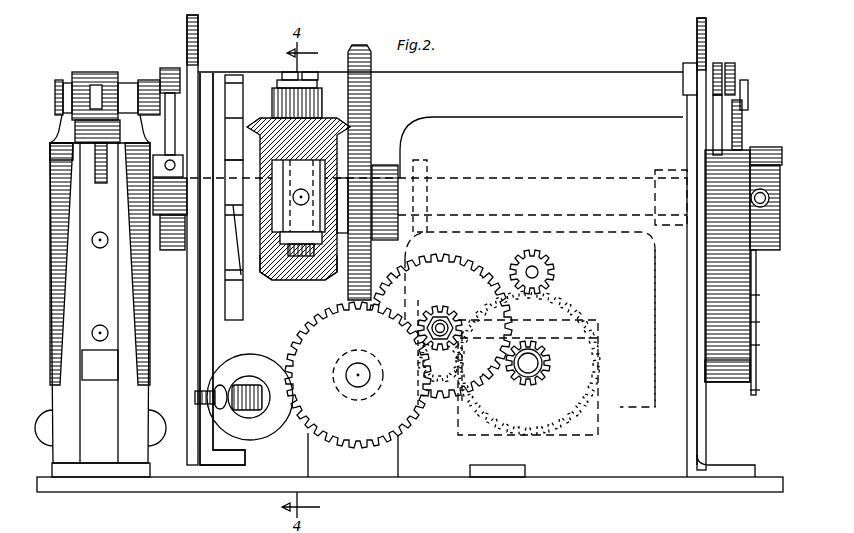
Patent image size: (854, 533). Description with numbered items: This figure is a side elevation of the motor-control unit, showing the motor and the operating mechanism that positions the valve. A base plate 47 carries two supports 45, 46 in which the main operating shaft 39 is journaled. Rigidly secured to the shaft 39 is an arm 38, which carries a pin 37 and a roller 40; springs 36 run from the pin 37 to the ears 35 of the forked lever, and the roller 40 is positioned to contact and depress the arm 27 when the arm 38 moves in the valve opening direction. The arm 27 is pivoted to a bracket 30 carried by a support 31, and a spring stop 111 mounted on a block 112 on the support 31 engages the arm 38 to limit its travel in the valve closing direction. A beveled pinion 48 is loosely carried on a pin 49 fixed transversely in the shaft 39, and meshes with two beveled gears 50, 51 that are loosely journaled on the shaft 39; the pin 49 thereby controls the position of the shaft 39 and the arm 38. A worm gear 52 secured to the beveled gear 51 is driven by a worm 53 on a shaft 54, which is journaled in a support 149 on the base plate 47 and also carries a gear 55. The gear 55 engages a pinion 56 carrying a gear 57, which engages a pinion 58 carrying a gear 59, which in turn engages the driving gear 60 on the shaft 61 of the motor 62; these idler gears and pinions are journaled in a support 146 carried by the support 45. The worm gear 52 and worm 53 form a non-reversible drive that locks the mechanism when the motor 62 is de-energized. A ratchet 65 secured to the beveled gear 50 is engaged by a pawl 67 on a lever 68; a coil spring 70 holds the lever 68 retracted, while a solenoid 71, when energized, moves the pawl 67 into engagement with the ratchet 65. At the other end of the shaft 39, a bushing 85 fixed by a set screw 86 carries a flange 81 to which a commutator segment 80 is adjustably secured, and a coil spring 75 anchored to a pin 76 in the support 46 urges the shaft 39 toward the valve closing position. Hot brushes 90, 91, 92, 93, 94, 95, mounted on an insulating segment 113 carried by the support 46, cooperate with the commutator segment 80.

The arm 27 is at (50, 151).
The bracket 30 is at (95, 219).
The support 31 is at (70, 400).
The ears 35 is at (38, 428).
The springs 36 is at (58, 259).
The pin 37 is at (55, 97).
The arm 38 is at (160, 72).
The main operating shaft 39 is at (468, 184).
The roller 40 is at (97, 78).
The support 45 is at (198, 38).
The support 46 is at (706, 33).
The base plate 47 is at (564, 484).
The beveled pinion 48 is at (308, 145).
The pin 49 is at (308, 153).
The beveled gear 50 is at (264, 256).
The beveled gear 51 is at (338, 262).
The worm gear 52 is at (372, 98).
The worm 53 is at (352, 393).
The shaft 54 is at (362, 384).
The gear 55 is at (405, 425).
The pinion 56 is at (444, 312).
The gear 57 is at (444, 396).
The pinion 58 is at (538, 373).
The gear 59 is at (598, 354).
The driving gear 60 is at (556, 286).
The shaft 61 is at (537, 268).
The motor 62 is at (655, 293).
The ratchet 65 is at (233, 78).
The pawl 67 is at (234, 268).
The lever 68 is at (222, 340).
The coil spring 70 is at (223, 410).
The solenoid 71 is at (258, 440).
The coil spring 75 is at (718, 63).
The pin 76 is at (735, 73).
The commutator segment 80 is at (748, 97).
The flange 81 is at (742, 131).
The bushing 85 is at (772, 151).
The set screw 86 is at (752, 192).
The brush 90 is at (758, 244).
The brush 91 is at (756, 271).
The brush 92 is at (764, 295).
The brush 93 is at (764, 322).
The brush 94 is at (765, 344).
The brush 95 is at (764, 390).
The spring stop 111 is at (172, 68).
The block 112 is at (181, 216).
The insulating segment 113 is at (733, 374).
The support 146 is at (577, 118).
The support 149 is at (362, 465).